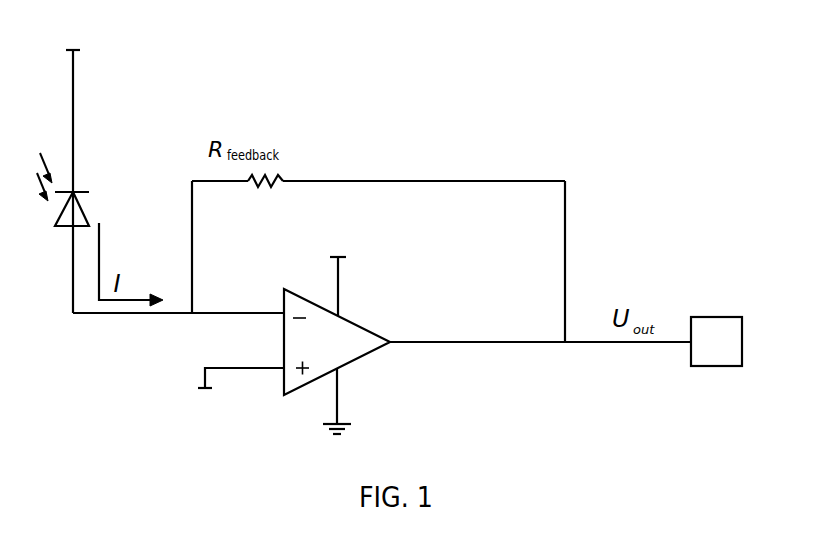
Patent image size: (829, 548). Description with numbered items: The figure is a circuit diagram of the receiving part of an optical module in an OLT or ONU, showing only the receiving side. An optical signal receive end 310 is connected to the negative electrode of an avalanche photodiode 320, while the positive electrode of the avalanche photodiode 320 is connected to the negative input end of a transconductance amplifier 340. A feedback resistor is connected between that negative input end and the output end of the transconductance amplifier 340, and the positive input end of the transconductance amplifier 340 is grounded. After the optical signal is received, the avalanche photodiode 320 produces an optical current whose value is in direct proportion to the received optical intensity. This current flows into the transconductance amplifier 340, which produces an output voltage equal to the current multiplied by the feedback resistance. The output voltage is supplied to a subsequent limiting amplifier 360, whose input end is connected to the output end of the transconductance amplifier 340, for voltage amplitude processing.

The optical signal receive end 310 is at (73, 88).
The avalanche photodiode 320 is at (80, 190).
The transconductance amplifier 340 is at (355, 318).
The limiting amplifier 360 is at (727, 318).